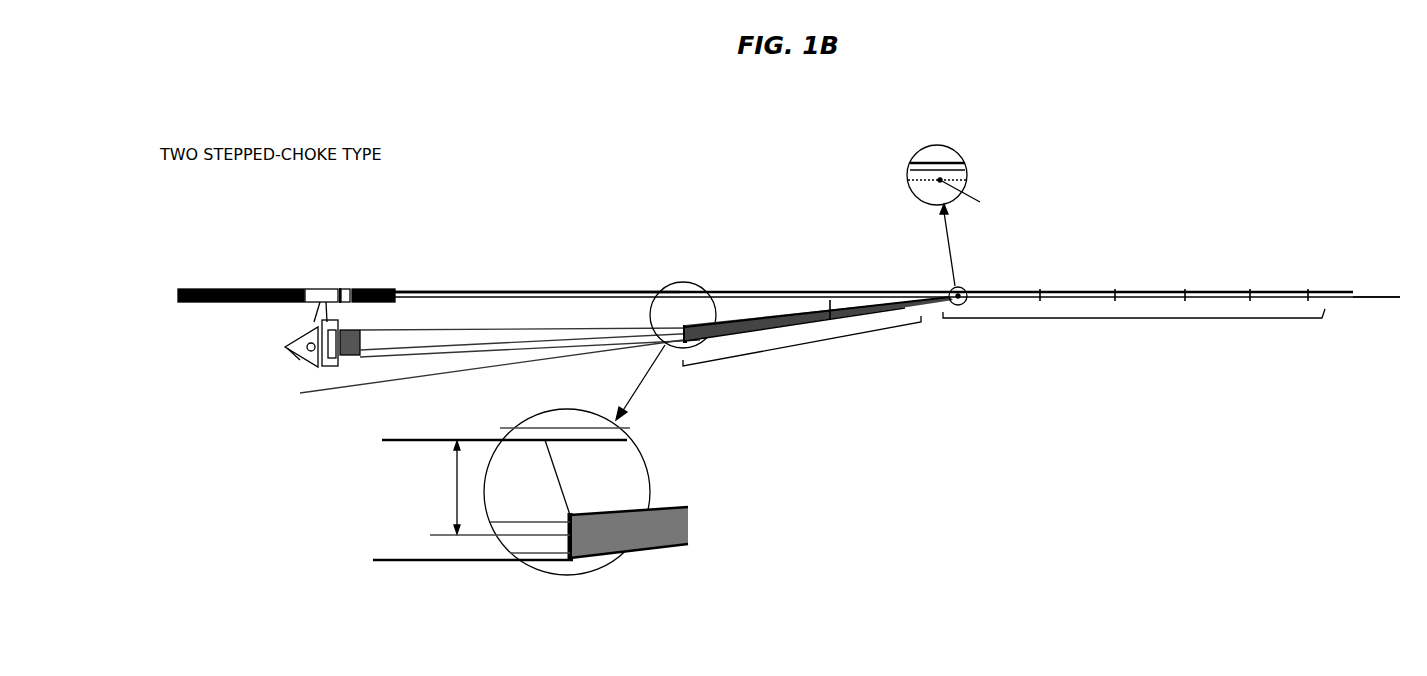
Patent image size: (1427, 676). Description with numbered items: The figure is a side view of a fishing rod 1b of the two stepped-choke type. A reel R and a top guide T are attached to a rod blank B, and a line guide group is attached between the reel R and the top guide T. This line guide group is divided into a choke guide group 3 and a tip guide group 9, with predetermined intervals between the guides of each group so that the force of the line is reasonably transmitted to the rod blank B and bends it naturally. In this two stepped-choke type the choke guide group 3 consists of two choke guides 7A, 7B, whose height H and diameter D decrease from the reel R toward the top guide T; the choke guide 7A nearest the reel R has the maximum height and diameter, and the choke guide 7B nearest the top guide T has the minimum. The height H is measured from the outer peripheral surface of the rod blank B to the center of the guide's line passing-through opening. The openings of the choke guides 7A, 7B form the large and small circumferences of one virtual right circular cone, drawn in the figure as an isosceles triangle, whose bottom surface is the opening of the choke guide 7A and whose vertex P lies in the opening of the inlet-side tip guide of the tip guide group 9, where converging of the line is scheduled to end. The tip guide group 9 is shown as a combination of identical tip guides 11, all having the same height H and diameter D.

The fishing rod 1b is at (228, 272).
The rod blank B is at (462, 290).
The reel R is at (300, 367).
The choke guide 7A is at (688, 343).
The choke guide 7B is at (830, 300).
The choke guide group 3 is at (773, 352).
The tip guide group 9 is at (1100, 318).
The tip guide 11 is at (1345, 246).
The top (vertex) of the cone shape P is at (960, 163).
The top guide T is at (1355, 298).
The height H is at (443, 487).
The diameter D is at (673, 509).